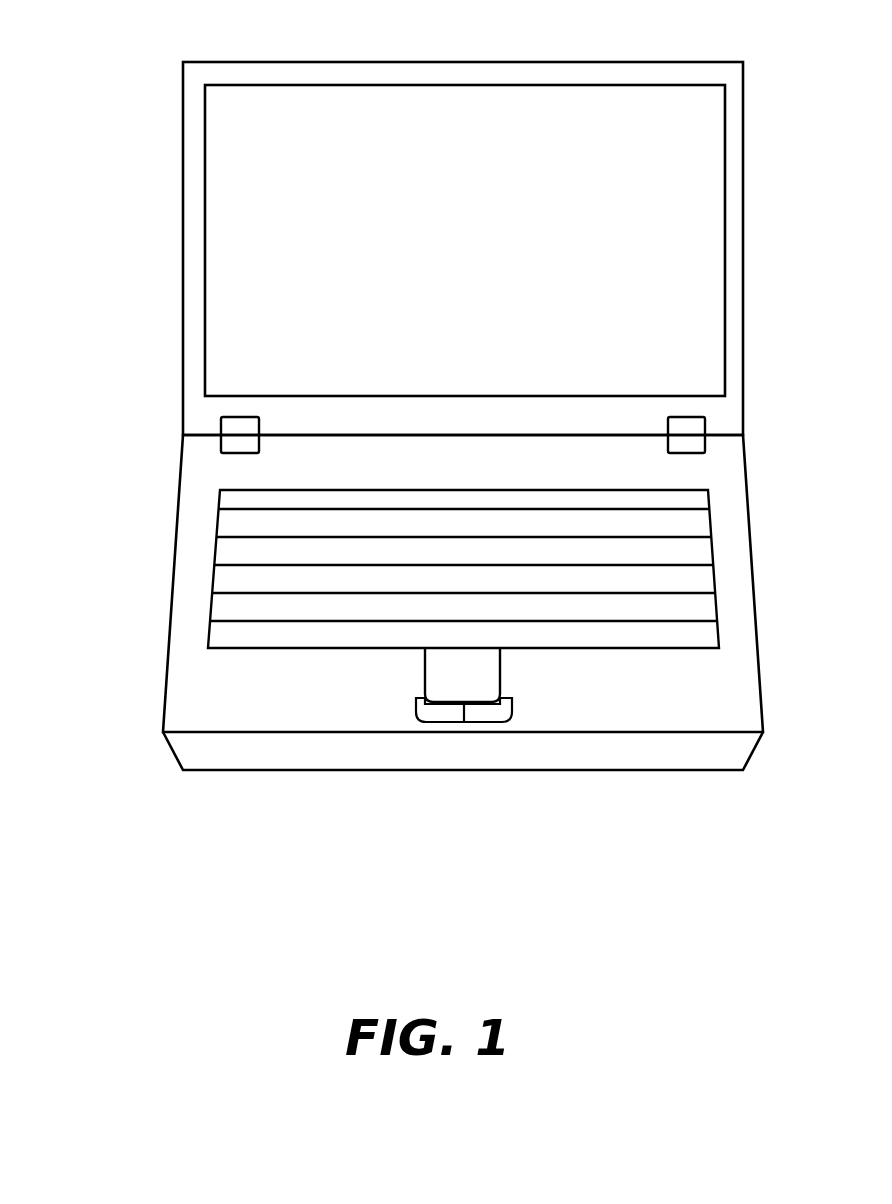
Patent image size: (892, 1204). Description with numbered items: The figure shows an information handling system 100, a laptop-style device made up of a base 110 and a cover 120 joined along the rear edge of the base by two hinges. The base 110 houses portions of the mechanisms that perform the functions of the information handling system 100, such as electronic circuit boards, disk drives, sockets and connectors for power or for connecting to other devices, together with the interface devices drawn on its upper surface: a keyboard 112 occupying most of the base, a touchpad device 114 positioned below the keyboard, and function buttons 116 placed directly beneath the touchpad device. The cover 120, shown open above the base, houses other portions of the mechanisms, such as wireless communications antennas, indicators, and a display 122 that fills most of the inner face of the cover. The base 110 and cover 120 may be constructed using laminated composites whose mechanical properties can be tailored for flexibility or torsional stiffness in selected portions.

The information handling system 100 is at (93, 872).
The base 110 is at (182, 493).
The keyboard 112 is at (342, 488).
The touchpad device 114 is at (425, 680).
The function buttons 116 is at (416, 706).
The cover 120 is at (207, 62).
The display 122 is at (207, 112).